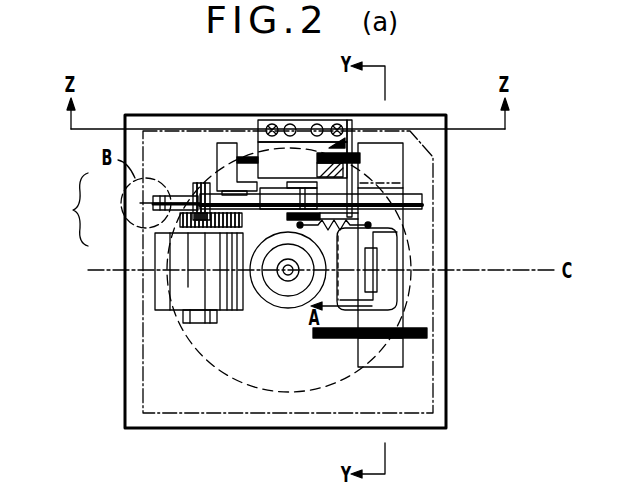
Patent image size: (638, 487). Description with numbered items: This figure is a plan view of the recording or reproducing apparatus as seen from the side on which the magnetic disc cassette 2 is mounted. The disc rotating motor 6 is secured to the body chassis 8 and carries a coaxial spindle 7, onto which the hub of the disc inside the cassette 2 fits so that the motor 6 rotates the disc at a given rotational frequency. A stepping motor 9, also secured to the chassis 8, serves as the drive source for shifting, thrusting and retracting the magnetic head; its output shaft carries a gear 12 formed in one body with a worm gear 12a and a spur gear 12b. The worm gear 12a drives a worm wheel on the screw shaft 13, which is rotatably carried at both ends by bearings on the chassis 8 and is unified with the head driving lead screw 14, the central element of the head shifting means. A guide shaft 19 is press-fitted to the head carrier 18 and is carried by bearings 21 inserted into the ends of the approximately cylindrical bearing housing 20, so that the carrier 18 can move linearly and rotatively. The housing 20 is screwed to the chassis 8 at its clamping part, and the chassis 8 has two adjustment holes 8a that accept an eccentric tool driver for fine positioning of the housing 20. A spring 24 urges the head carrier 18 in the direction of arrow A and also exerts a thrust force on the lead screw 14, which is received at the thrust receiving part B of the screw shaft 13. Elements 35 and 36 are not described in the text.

The cassette 2 is at (447, 362).
The body chassis 8 is at (447, 418).
The adjustment holes 8a is at (312, 113).
The disc rotating motor 6 is at (273, 300).
The spindle 7 is at (290, 278).
The stepping motor 9 is at (157, 296).
The gear 12 is at (68, 209).
The worm gear 12a is at (166, 200).
The spur gear 12b is at (182, 222).
The screw shaft 13 is at (186, 200).
The head driving lead screw 14 is at (272, 193).
The head carrier 18 is at (395, 362).
The guide shaft 19 is at (352, 142).
The bearing housing 20 is at (258, 142).
The bearings 21 is at (335, 124).
The spring 24 is at (350, 243).
The motor bracket 35 is at (227, 298).
The bracket 36 is at (226, 143).